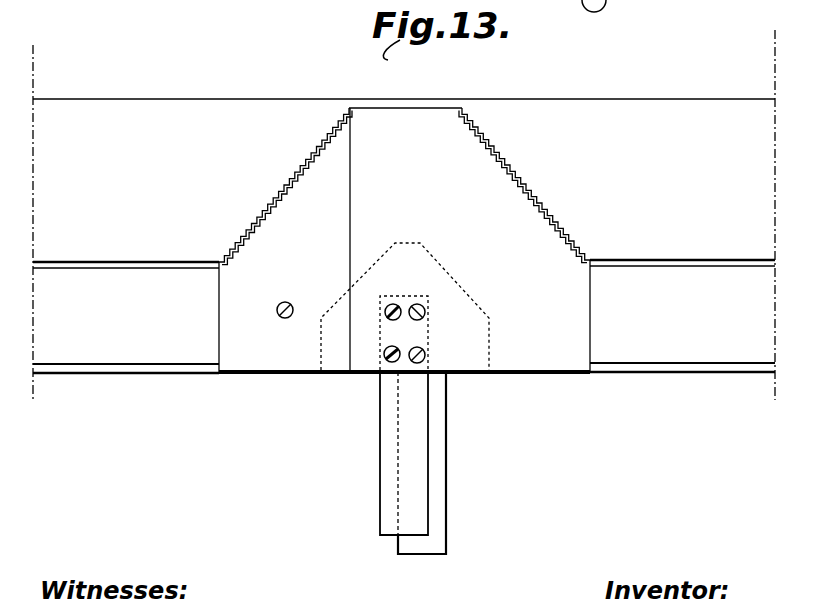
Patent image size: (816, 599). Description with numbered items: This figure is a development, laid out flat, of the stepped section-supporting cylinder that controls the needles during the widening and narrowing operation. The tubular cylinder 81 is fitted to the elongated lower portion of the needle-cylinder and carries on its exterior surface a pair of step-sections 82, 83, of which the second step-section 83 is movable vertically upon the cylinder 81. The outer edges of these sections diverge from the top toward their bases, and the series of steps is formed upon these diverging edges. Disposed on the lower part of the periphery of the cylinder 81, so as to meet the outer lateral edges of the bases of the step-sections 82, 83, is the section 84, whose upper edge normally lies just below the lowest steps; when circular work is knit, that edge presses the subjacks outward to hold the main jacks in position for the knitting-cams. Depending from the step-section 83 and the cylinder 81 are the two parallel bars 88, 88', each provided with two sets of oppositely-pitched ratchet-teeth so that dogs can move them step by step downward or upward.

The tubular cylinder 81 is at (612, 109).
The step-section 82 is at (285, 186).
The step-section 83 is at (525, 182).
The section 84 is at (404, 316).
The bar 88 is at (383, 463).
The bar 88' is at (418, 484).